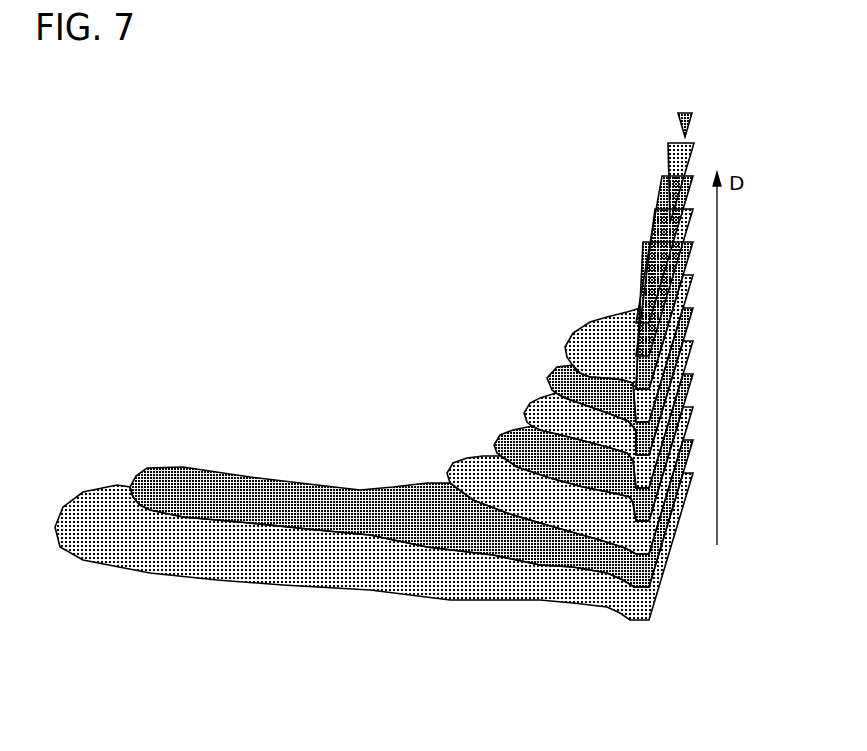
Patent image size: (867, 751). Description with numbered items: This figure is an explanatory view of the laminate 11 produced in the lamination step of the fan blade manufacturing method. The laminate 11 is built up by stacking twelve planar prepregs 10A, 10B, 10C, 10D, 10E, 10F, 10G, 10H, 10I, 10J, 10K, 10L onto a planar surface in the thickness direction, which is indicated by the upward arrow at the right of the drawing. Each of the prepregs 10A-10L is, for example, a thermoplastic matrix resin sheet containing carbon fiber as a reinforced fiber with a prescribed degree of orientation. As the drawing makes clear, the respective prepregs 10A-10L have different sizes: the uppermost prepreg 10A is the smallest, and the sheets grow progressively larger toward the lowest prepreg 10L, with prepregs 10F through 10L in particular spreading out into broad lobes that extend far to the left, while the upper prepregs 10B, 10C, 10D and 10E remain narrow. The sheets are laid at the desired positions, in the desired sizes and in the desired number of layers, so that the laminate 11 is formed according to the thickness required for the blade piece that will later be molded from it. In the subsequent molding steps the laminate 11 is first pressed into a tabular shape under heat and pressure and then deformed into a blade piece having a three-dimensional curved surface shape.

The laminate 11 is at (272, 246).
The prepreg 10A is at (680, 122).
The prepreg 10B is at (669, 161).
The prepreg 10C is at (665, 186).
The prepreg 10D is at (656, 242).
The prepreg 10E is at (641, 281).
The prepreg 10F is at (603, 325).
The prepreg 10G is at (556, 366).
The prepreg 10H is at (537, 403).
The prepreg 10I is at (505, 443).
The prepreg 10J is at (463, 472).
The prepreg 10K is at (243, 478).
The prepreg 10L is at (95, 500).